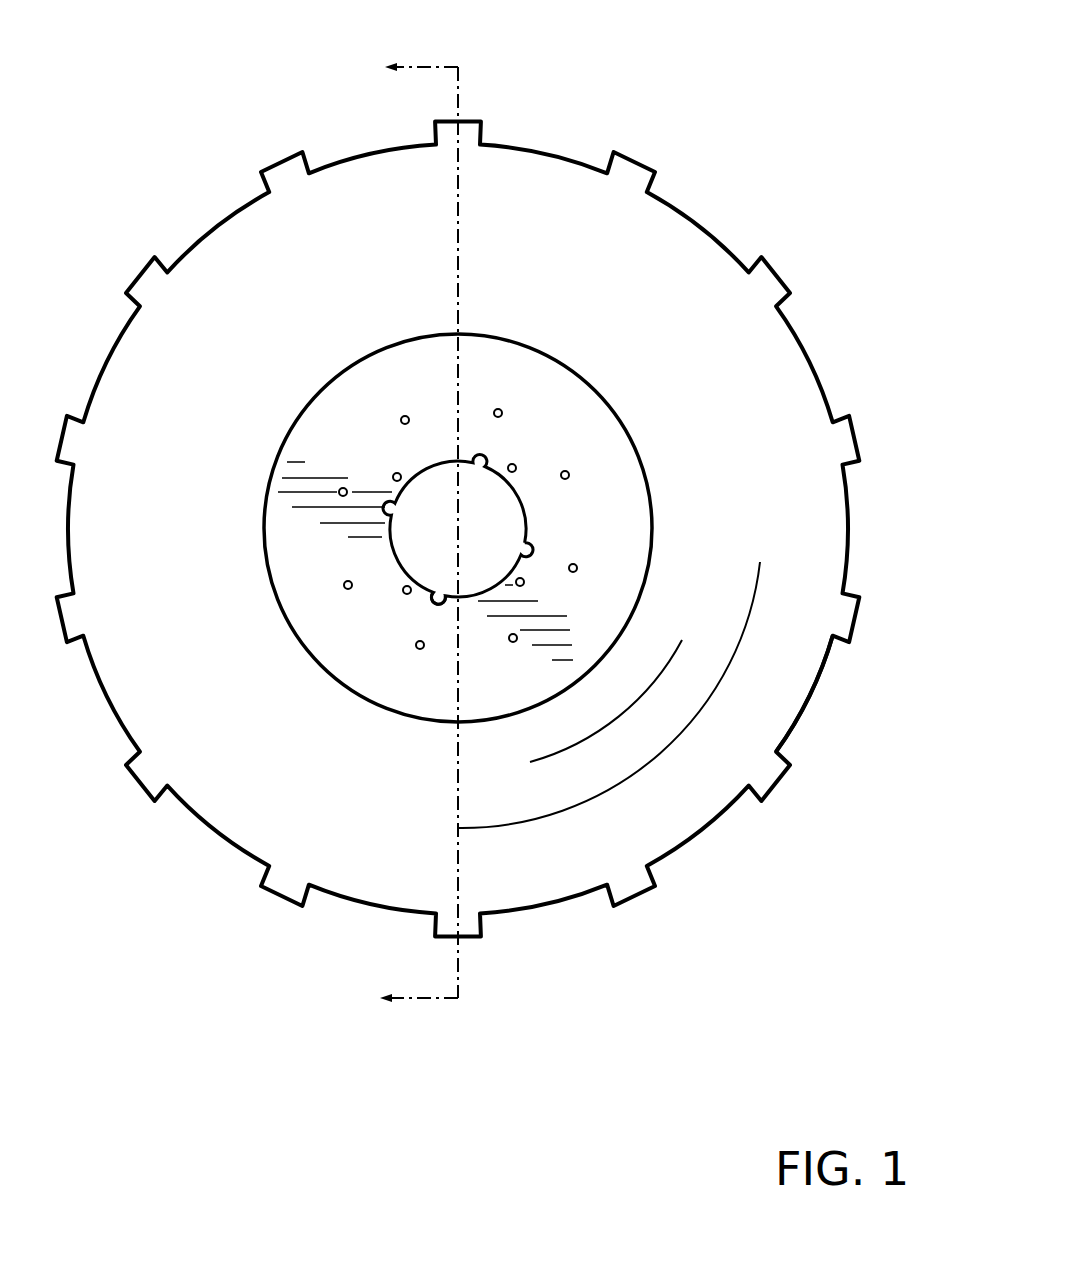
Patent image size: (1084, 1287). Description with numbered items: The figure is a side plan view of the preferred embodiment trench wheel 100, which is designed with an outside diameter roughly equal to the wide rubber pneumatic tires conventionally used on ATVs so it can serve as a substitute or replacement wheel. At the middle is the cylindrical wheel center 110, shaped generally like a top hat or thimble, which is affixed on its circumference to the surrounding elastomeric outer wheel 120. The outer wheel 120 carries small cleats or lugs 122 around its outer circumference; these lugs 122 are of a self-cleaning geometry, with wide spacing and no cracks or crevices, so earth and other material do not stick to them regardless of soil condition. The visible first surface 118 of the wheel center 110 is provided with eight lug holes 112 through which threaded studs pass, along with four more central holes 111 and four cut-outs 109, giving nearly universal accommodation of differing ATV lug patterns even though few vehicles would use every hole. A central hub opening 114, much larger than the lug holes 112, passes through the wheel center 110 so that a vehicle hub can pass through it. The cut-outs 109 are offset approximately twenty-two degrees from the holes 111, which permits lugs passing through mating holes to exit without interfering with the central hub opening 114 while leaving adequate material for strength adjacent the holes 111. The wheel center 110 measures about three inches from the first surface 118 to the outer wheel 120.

The trench wheel 100 is at (797, 147).
The cut-outs 109 is at (437, 600).
The wheel center 110 is at (500, 375).
The central holes 111 is at (395, 474).
The lug holes 112 is at (502, 413).
The central hub opening 114 is at (523, 500).
The first surface 118 is at (432, 389).
The elastomeric outer wheel 120 is at (793, 403).
The lugs 122 is at (780, 776).